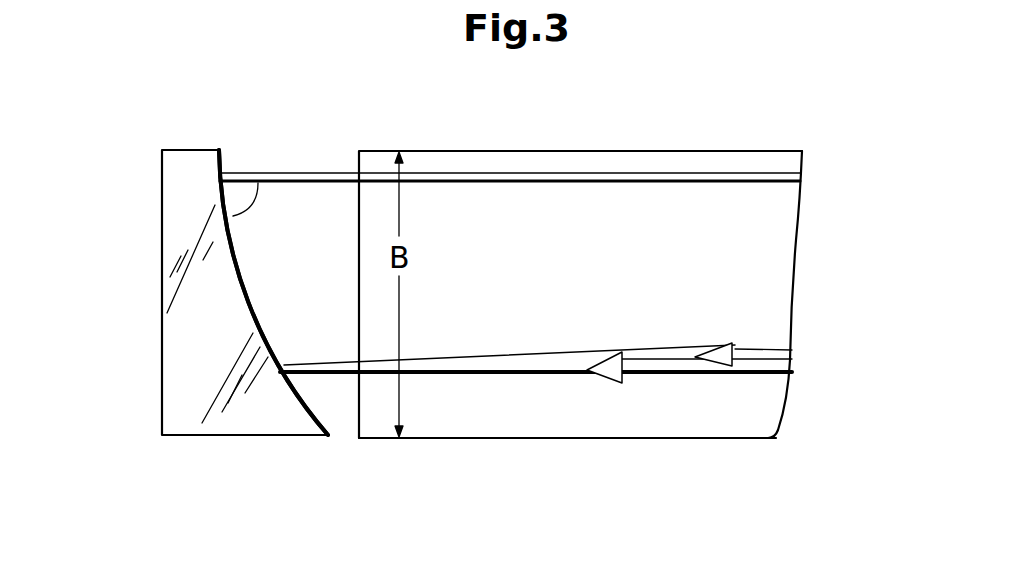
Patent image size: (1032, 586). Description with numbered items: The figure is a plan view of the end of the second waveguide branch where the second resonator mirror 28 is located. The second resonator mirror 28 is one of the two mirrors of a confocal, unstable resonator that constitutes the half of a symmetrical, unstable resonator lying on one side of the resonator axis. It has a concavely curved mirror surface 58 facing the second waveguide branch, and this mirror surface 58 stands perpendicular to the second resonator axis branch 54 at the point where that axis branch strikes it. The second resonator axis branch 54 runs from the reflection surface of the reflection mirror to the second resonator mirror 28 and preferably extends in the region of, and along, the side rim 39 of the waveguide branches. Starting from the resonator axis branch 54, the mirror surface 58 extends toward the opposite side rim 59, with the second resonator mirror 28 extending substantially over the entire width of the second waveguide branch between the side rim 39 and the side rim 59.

The second resonator mirror 28 is at (205, 313).
The side rim 39 is at (665, 152).
The second resonator axis branch 54 is at (313, 176).
The concavely curved mirror surface 58 is at (282, 381).
The side rim 59 is at (685, 438).